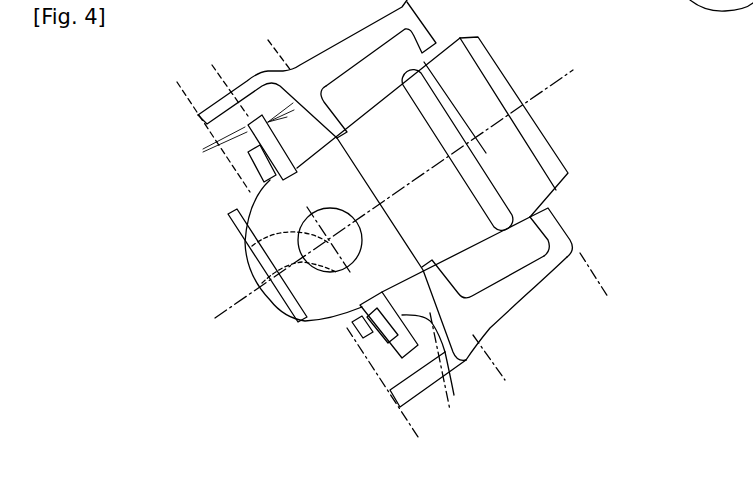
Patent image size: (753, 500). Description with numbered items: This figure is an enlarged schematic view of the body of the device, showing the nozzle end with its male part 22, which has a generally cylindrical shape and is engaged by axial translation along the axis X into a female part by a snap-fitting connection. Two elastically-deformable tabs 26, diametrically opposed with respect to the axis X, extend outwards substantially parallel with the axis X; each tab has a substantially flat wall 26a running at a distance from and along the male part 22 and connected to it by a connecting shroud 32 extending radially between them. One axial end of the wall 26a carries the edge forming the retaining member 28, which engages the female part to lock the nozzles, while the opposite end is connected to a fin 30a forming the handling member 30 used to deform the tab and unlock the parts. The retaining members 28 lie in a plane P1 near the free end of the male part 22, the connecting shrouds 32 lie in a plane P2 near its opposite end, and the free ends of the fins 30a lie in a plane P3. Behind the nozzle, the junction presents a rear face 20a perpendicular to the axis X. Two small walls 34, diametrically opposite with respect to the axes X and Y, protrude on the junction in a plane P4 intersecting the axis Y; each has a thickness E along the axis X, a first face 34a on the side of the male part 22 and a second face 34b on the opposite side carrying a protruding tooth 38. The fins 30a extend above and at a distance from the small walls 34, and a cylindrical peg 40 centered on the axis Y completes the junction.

The rear face 20a is at (250, 289).
The male part 22 is at (476, 88).
The elastically-deformable tab 26 is at (487, 308).
The flat wall 26a is at (423, 333).
The retaining member 28 is at (560, 222).
The handling member 30 is at (320, 226).
The fin 30a is at (428, 379).
The connecting shroud 32 is at (337, 113).
The small wall 34 is at (247, 110).
The first face 34a is at (450, 385).
The second face 34b is at (393, 345).
The tooth 38 is at (250, 165).
The cylindrical peg 40 is at (262, 256).
The axis X is at (562, 78).
The axis Y is at (278, 308).
The thickness E is at (203, 151).
The plane P1 is at (608, 280).
The plane P2 is at (502, 375).
The plane P3 is at (415, 430).
The plane P4 is at (430, 413).